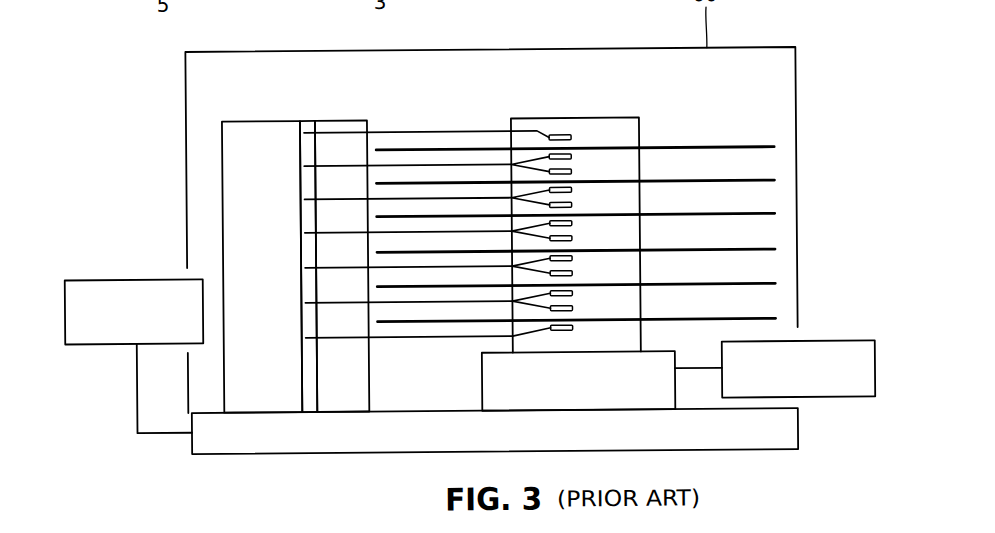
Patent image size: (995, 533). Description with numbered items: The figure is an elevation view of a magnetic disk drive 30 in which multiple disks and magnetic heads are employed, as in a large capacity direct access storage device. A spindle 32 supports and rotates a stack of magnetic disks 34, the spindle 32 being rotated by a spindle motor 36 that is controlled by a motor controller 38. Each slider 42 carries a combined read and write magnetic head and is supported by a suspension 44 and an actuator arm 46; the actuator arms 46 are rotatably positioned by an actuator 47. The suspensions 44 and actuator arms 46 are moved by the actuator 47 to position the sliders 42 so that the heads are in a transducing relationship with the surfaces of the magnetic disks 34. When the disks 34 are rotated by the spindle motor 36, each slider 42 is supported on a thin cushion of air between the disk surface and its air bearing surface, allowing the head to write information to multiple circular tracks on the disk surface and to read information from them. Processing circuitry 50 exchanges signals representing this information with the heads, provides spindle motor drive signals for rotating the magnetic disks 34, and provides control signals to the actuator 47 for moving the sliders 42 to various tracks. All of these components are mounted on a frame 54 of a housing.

The magnetic disk drive 30 is at (690, 120).
The spindle 32 is at (628, 119).
The magnetic disk 34 is at (772, 151).
The spindle motor 36 is at (568, 391).
The motor controller 38 is at (830, 402).
The slider 42 is at (552, 154).
The suspension 44 is at (545, 160).
The actuator arm 46 is at (479, 164).
The actuator 47 is at (253, 118).
The processing circuitry 50 is at (107, 277).
The frame 54 is at (241, 453).